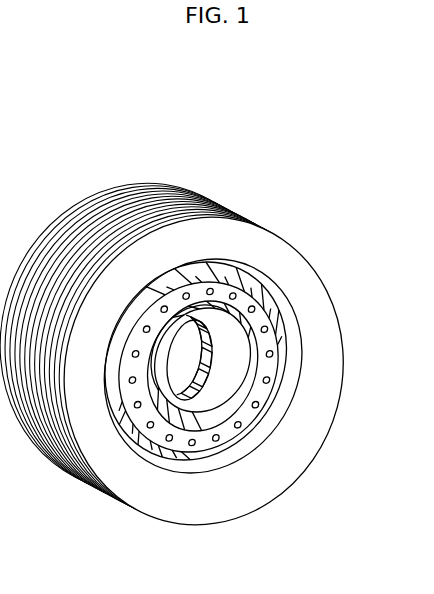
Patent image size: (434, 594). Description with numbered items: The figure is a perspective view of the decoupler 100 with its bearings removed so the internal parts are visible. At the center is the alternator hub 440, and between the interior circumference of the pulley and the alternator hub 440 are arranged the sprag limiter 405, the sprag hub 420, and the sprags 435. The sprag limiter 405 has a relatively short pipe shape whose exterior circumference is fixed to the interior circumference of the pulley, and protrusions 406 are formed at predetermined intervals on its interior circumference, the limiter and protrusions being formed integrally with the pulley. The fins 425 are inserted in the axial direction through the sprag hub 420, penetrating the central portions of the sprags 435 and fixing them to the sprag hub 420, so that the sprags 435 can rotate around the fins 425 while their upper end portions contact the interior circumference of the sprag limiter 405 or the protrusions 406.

The decoupler 100 is at (239, 141).
The sprag limiter 405 is at (240, 442).
The protrusions 406 is at (188, 461).
The sprag hub 420 is at (268, 343).
The fins 425 is at (253, 305).
The sprags 435 is at (230, 271).
The alternator hub 440 is at (227, 377).